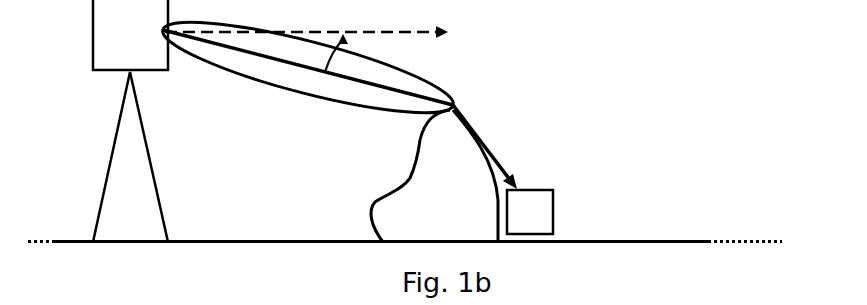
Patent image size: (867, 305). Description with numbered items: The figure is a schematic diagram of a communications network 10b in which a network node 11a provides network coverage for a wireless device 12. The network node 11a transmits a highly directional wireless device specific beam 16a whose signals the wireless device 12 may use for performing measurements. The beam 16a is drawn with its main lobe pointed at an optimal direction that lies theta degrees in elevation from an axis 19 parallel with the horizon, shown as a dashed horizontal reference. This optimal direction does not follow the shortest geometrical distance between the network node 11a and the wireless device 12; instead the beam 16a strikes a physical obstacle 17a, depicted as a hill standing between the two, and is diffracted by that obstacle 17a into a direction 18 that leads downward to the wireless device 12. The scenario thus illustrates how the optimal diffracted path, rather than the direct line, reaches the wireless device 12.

The communications network 10b is at (624, 85).
The network node 11a is at (149, 28).
The wireless device 12 is at (518, 223).
The wireless device specific beam 16a is at (237, 66).
The physical obstacle 17a is at (415, 163).
The direction 18 is at (480, 140).
The axis 19 is at (418, 33).